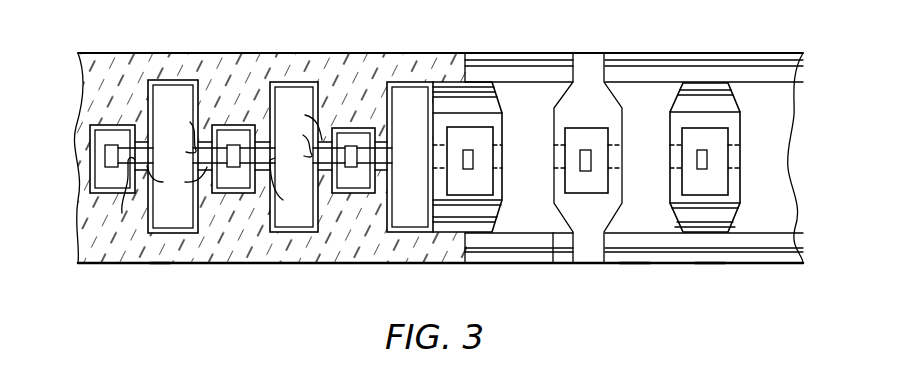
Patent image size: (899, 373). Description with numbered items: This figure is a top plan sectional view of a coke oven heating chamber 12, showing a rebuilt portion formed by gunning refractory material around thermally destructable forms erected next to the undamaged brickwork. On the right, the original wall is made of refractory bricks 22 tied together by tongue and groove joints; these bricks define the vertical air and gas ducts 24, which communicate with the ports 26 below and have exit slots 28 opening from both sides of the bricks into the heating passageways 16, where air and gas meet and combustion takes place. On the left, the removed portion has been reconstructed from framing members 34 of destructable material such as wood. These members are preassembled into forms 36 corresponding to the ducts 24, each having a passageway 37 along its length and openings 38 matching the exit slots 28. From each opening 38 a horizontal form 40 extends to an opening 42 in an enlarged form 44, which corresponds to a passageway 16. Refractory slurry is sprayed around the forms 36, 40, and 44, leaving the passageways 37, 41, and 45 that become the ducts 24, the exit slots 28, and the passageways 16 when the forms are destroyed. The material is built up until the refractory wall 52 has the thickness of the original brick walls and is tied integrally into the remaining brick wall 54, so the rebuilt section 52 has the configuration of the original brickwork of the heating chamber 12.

The heating chamber 12 is at (190, 50).
The heating flues or passageways 16 is at (292, 90).
The refractory bricks 22 is at (632, 257).
The vertical air and gas ducts 24 is at (483, 177).
The air ports or gas ports 26 is at (112, 155).
The exit slots 28 is at (447, 143).
The framing members 34 is at (107, 124).
The form for vertical ducts 36 is at (87, 132).
The passageway of form 36 37 is at (100, 148).
The openings in forms 36 38 is at (402, 107).
The horizontal forms 40 is at (145, 135).
The passageway of form 40 41 is at (232, 156).
The opening in form 44 42 is at (234, 157).
The enlarged form 44 is at (167, 76).
The passageway of form 44 45 is at (141, 130).
The refractory wall or rebuilt section 52 is at (160, 247).
The brick wall 54 is at (708, 257).